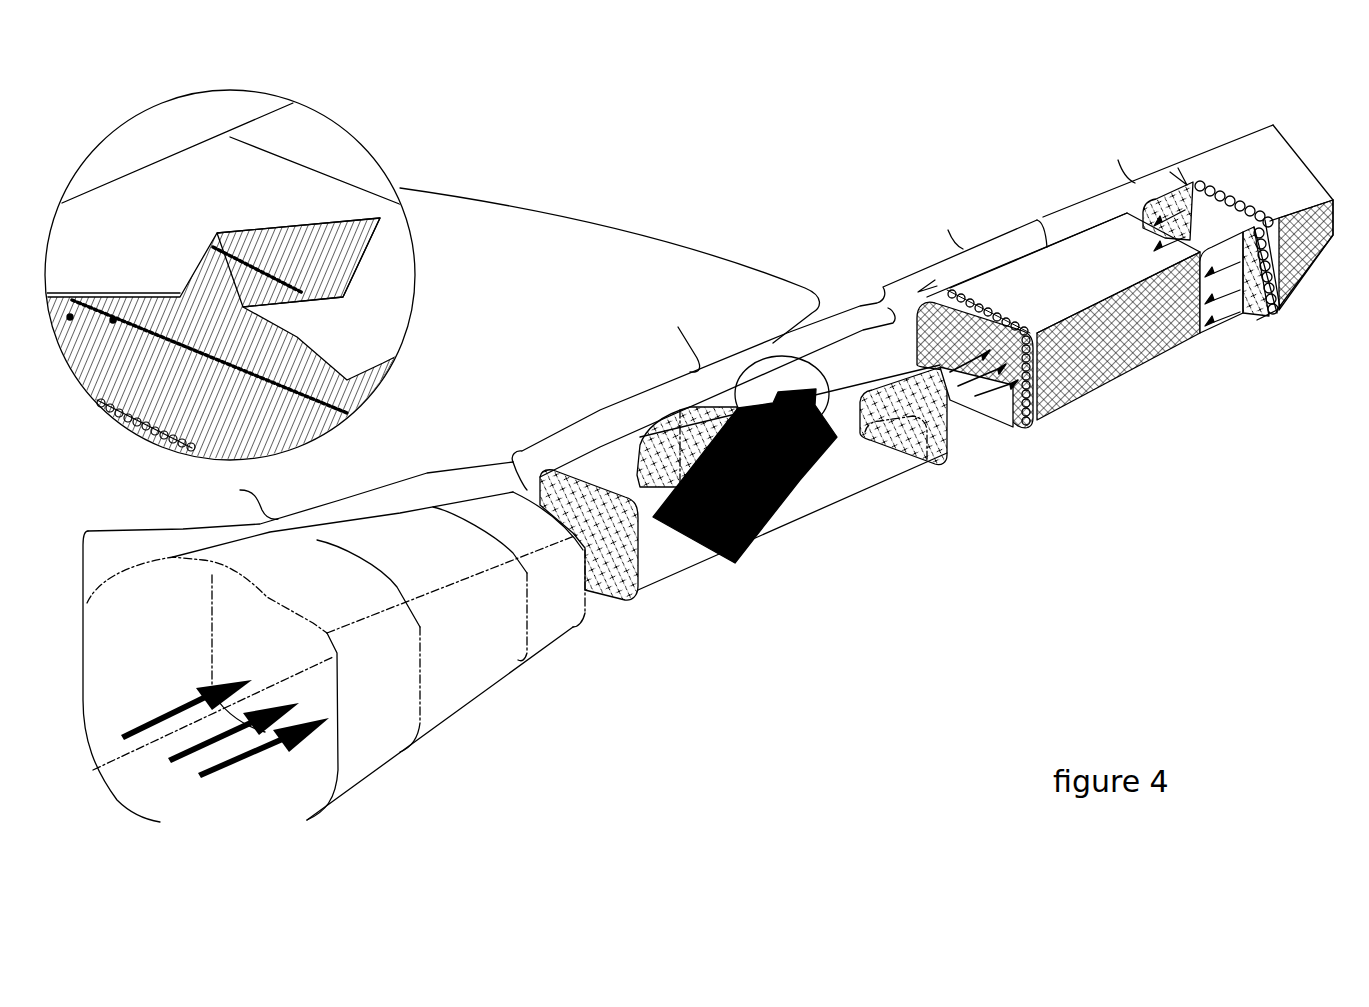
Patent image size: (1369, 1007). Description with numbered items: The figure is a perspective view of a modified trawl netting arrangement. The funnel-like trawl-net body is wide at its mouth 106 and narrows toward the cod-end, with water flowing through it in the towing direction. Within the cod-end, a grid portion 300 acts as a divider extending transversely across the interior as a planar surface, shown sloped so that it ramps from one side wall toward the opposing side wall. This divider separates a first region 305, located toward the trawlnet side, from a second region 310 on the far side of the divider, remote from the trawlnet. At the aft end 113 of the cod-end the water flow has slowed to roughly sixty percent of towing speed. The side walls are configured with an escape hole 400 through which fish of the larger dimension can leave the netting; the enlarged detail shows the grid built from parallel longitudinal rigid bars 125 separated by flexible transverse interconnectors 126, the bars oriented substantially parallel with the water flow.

The mouth 106 is at (147, 712).
The aft end 113 is at (1297, 197).
The rigid bars 125 is at (107, 300).
The interconnectors 126 is at (115, 292).
The grid portion 300 is at (800, 480).
The first region 305 is at (618, 582).
The second region 310 is at (847, 455).
The escape hole 400 is at (375, 248).